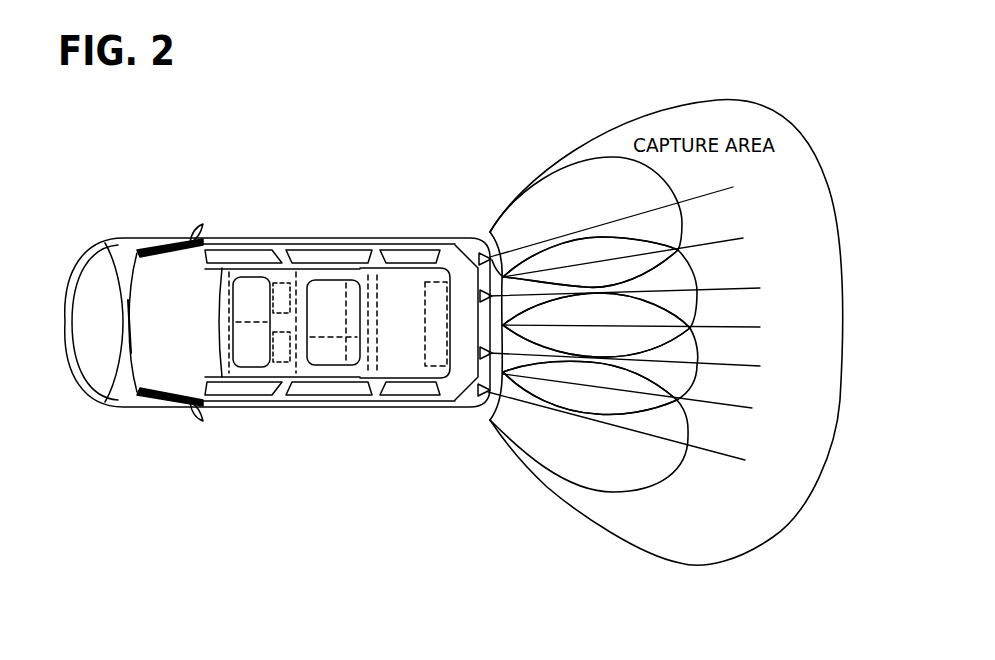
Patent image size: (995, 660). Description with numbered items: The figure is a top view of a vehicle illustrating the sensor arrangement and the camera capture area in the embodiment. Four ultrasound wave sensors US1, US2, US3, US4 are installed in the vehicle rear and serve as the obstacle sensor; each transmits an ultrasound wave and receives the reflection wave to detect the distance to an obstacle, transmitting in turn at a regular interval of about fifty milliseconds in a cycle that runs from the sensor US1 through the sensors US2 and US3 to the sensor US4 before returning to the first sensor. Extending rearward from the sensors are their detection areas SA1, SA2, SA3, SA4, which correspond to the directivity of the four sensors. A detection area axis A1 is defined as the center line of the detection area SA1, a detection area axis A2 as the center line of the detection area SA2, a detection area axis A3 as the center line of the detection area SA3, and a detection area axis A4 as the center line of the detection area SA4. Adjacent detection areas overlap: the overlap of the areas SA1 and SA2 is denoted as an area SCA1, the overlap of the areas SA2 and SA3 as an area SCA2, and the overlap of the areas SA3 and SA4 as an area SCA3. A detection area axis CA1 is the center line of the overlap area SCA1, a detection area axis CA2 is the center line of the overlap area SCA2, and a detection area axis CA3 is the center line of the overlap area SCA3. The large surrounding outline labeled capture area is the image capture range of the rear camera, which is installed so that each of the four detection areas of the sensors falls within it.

The ultrasound wave sensor US1 is at (479, 259).
The ultrasound wave sensor US2 is at (482, 292).
The ultrasound wave sensor US3 is at (482, 349).
The ultrasound wave sensor US4 is at (480, 396).
The detection area SA1 is at (586, 222).
The detection area SA2 is at (600, 297).
The detection area SA3 is at (600, 353).
The detection area SA4 is at (589, 426).
The overlap area SCA1 is at (590, 262).
The overlap area SCA2 is at (596, 325).
The overlap area SCA3 is at (590, 387).
The detection area axis A1 is at (624, 215).
The detection area axis A2 is at (637, 287).
The detection area axis A3 is at (638, 367).
The detection area axis A4 is at (629, 433).
The detection area axis CA1 is at (641, 252).
The detection area axis CA2 is at (650, 331).
The detection area axis CA3 is at (646, 400).